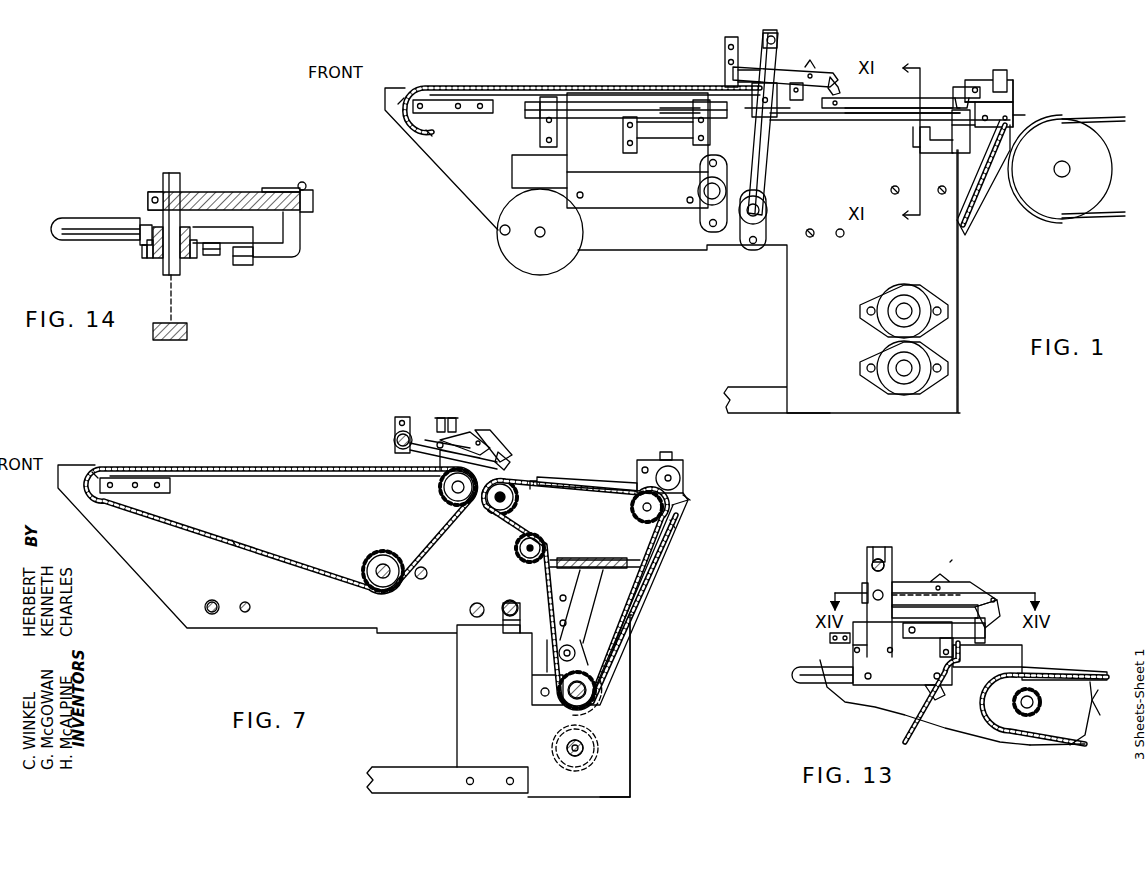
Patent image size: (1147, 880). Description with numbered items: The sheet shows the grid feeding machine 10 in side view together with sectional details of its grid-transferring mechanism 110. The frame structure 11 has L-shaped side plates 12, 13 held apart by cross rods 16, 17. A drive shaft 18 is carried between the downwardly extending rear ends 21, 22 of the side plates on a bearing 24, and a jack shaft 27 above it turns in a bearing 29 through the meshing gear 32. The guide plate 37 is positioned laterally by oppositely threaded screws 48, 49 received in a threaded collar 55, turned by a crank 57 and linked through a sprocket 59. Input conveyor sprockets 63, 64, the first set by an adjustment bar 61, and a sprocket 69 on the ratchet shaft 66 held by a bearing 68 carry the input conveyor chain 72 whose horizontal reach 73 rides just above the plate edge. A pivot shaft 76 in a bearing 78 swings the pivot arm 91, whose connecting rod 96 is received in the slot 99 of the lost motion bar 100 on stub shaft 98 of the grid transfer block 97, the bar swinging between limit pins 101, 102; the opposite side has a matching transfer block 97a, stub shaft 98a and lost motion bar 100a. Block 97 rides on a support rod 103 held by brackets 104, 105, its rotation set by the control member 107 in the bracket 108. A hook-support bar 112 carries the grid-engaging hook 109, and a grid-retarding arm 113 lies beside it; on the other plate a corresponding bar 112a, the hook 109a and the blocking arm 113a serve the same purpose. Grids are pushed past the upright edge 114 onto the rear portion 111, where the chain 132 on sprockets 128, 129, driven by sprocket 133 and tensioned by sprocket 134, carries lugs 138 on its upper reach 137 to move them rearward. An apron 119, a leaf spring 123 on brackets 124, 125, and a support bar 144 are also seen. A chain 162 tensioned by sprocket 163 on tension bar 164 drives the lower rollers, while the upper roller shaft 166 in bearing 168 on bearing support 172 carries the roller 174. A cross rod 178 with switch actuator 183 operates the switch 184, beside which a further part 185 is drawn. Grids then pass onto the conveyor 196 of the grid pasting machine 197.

In FIG. 1, the grid feeding machine 10 is at (982, 374).
In FIG. 7, the grid feeding machine 10 is at (658, 626).
In FIG. 1, the frame structure 11 is at (823, 418).
In FIG. 7, the frame structure 11 is at (634, 773).
In FIG. 7, the side plate 12 is at (632, 650).
In FIG. 1, the side plate 13 is at (876, 204).
In FIG. 7, the cross rod 16 is at (472, 620).
In FIG. 7, the cross rod 17 is at (252, 606).
In FIG. 1, the drive shaft 18 is at (900, 370).
In FIG. 7, the drive shaft 18 is at (568, 758).
In FIG. 7, the rearward downwardly extending end of side plate 21 is at (470, 710).
In FIG. 1, the rearward downwardly extending end of side plate 22 is at (945, 280).
In FIG. 1, the bearing 24 is at (918, 385).
In FIG. 1, the jack shaft 27 is at (900, 310).
In FIG. 1, the bearing 29 is at (893, 293).
In FIG. 7, the gear 32 is at (555, 750).
In FIG. 1, the guide plate 37 is at (671, 250).
In FIG. 7, the guide plate 37 is at (344, 631).
In FIG. 13, the guide plate 37 is at (985, 740).
In FIG. 7, the screw 48 is at (205, 605).
In FIG. 7, the screw 49 is at (505, 604).
In FIG. 7, the threaded collar 55 is at (214, 600).
In FIG. 1, the crank 57 is at (549, 262).
In FIG. 7, the sprocket 59 is at (505, 640).
In FIG. 1, the adjustment bar 61 is at (453, 106).
In FIG. 7, the adjustment bar 61 is at (147, 490).
In FIG. 1, the input conveyor sprocket 63 is at (398, 110).
In FIG. 7, the input conveyor sprocket 63 is at (97, 465).
In FIG. 7, the input conveyor sprocket 64 is at (445, 495).
In FIG. 13, the input conveyor sprocket 64 is at (930, 697).
In FIG. 1, the ratchet shaft 66 is at (704, 191).
In FIG. 7, the ratchet shaft 66 is at (382, 558).
In FIG. 1, the bearing 68 is at (703, 220).
In FIG. 7, the sprocket 69 is at (365, 575).
In FIG. 1, the input conveyor chain 72 is at (425, 143).
In FIG. 7, the input conveyor chain 72 is at (230, 540).
In FIG. 13, the input conveyor chain 72 is at (905, 745).
In FIG. 1, the horizontal reach 73 is at (515, 87).
In FIG. 7, the horizontal reach 73 is at (247, 465).
In FIG. 13, the horizontal reach 73 is at (830, 638).
In FIG. 1, the pivot shaft 76 is at (765, 197).
In FIG. 7, the pivot shaft 76 is at (421, 580).
In FIG. 1, the bearing 78 is at (760, 225).
In FIG. 1, the pivot arm 91 is at (760, 165).
In FIG. 14, the pivot arm 91 is at (172, 335).
In FIG. 1, the connecting rod 96 is at (770, 42).
In FIG. 13, the connecting rod 96 is at (872, 563).
In FIG. 1, the grid transfer block 97 is at (785, 112).
In FIG. 14, the grid transfer block 97 is at (144, 225).
In FIG. 13, the grid transfer block 97 is at (880, 672).
In FIG. 14, the stub shaft 98 is at (168, 172).
In FIG. 13, the stub shaft 98 is at (868, 592).
In FIG. 13, the slot 99 is at (878, 547).
In FIG. 14, the lost motion bar 100 is at (157, 260).
In FIG. 13, the lost motion bar 100 is at (885, 580).
In FIG. 14, the limit pin 101 is at (141, 250).
In FIG. 13, the limit pin 101 is at (850, 655).
In FIG. 14, the limit pin 102 is at (186, 260).
In FIG. 13, the limit pin 102 is at (895, 655).
In FIG. 1, the support rod 103 is at (640, 105).
In FIG. 14, the support rod 103 is at (72, 218).
In FIG. 13, the support rod 103 is at (805, 685).
In FIG. 1, the bracket 104 is at (549, 128).
In FIG. 1, the bracket 105 is at (712, 135).
In FIG. 1, the control member 107 is at (688, 108).
In FIG. 1, the bracket 108 is at (640, 150).
In FIG. 1, the grid-engaging hook 109 is at (838, 80).
In FIG. 14, the grid-engaging hook 109 is at (278, 190).
In FIG. 13, the grid-engaging hook 109 is at (1000, 600).
In FIG. 13, the grid-transferring mechanism 110 is at (952, 560).
In FIG. 1, the rear portion of upper edge 111 is at (896, 100).
In FIG. 7, the rear portion of upper edge 111 is at (595, 498).
In FIG. 13, the rear portion of upper edge 111 is at (1075, 672).
In FIG. 1, the hook-support bar 112 is at (797, 68).
In FIG. 14, the hook-support bar 112 is at (222, 192).
In FIG. 13, the hook-support bar 112 is at (970, 590).
In FIG. 1, the grid-retarding arm 113 is at (810, 100).
In FIG. 14, the grid-retarding arm 113 is at (278, 250).
In FIG. 13, the grid-retarding arm 113 is at (966, 642).
In FIG. 1, the upright edge 114 is at (840, 100).
In FIG. 7, the upright edge 114 is at (525, 488).
In FIG. 13, the upright edge 114 is at (1025, 655).
In FIG. 1, the apron 119 is at (583, 155).
In FIG. 7, the leaf spring 123 is at (410, 420).
In FIG. 7, the bracket 124 is at (390, 432).
In FIG. 1, the bracket 125 is at (726, 52).
In FIG. 7, the sprocket 128 is at (498, 508).
In FIG. 13, the sprocket 128 is at (1018, 730).
In FIG. 1, the sprocket 129 is at (963, 132).
In FIG. 7, the sprocket 129 is at (677, 525).
In FIG. 1, the chain 132 is at (982, 175).
In FIG. 7, the chain 132 is at (648, 598).
In FIG. 13, the chain 132 is at (1070, 748).
In FIG. 7, the sprocket 133 is at (545, 700).
In FIG. 7, the tension sprocket 134 is at (525, 558).
In FIG. 7, the upper reach 137 is at (598, 505).
In FIG. 13, the upper reach 137 is at (1095, 685).
In FIG. 13, the lug 138 is at (1002, 673).
In FIG. 7, the support bar 144 is at (575, 556).
In FIG. 1, the chain 162 is at (963, 228).
In FIG. 7, the chain 162 is at (675, 550).
In FIG. 7, the tensioning sprocket 163 is at (555, 642).
In FIG. 7, the tension bar 164 is at (605, 562).
In FIG. 7, the upper roller shaft 166 is at (682, 482).
In FIG. 1, the bearing 168 is at (1012, 88).
In FIG. 7, the bearing 168 is at (690, 470).
In FIG. 1, the bearing support 172 is at (1008, 112).
In FIG. 7, the roller 174 is at (688, 500).
In FIG. 1, the cross rod 178 is at (976, 85).
In FIG. 7, the cross rod 178 is at (643, 462).
In FIG. 1, the switch actuator 183 is at (955, 95).
In FIG. 1, the switch 184 is at (920, 120).
In FIG. 1, the plate 185 is at (913, 140).
In FIG. 1, the conveyor 196 is at (1100, 118).
In FIG. 1, the grid pasting machine 197 is at (1080, 228).
In FIG. 7, the grid transfer block 97a is at (455, 437).
In FIG. 7, the stub shaft 98a is at (425, 485).
In FIG. 7, the lost motion bar 100a is at (430, 428).
In FIG. 7, the grid-engaging hook 109a is at (515, 462).
In FIG. 7, the plate 112a is at (478, 437).
In FIG. 7, the grid-blocking arm 113a is at (508, 445).